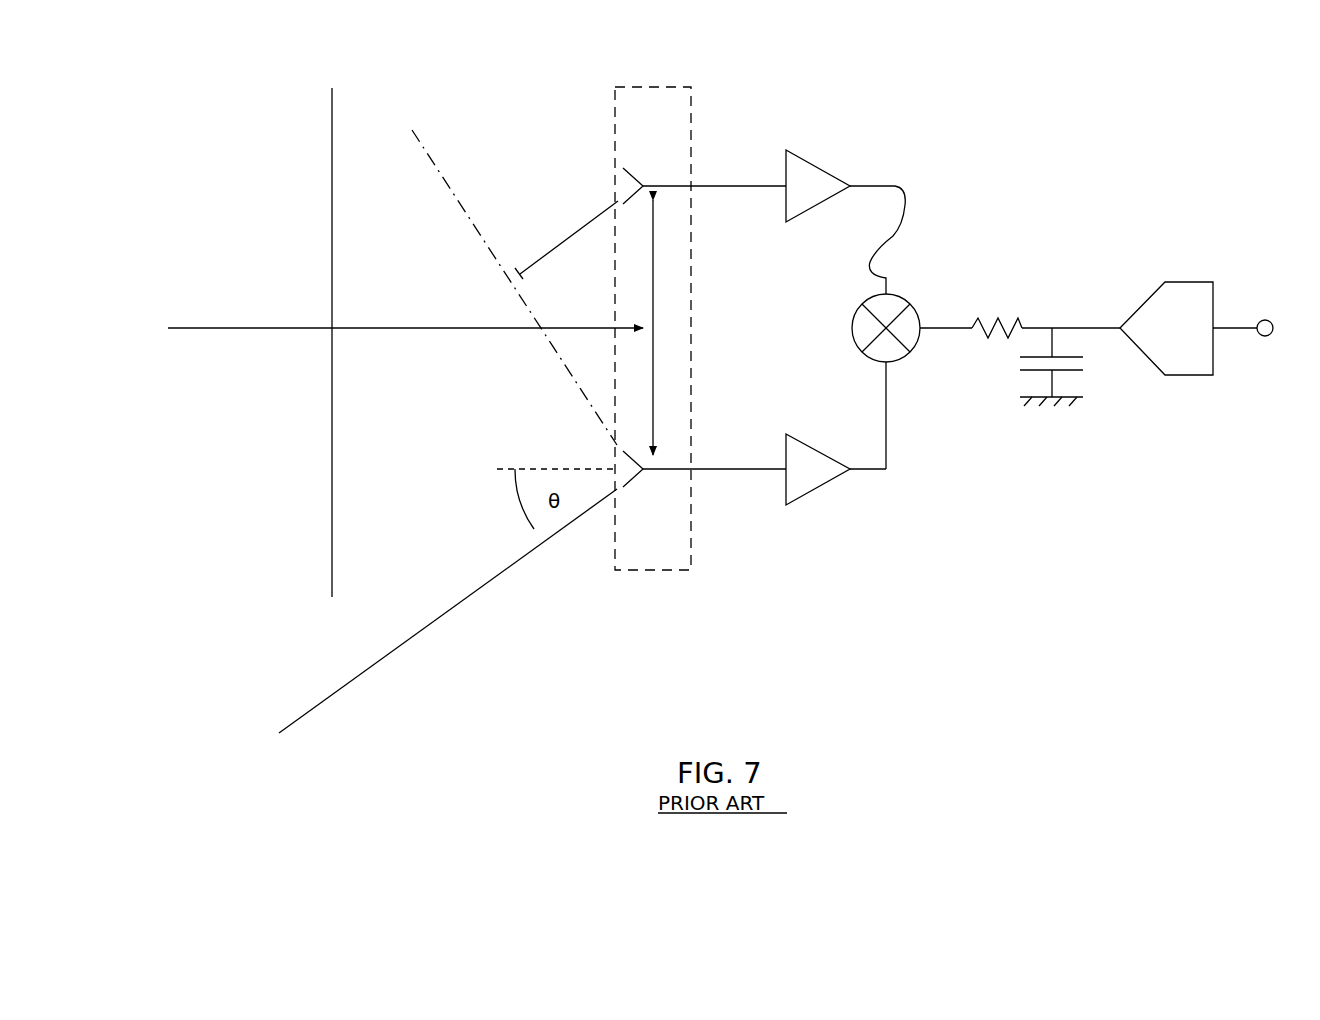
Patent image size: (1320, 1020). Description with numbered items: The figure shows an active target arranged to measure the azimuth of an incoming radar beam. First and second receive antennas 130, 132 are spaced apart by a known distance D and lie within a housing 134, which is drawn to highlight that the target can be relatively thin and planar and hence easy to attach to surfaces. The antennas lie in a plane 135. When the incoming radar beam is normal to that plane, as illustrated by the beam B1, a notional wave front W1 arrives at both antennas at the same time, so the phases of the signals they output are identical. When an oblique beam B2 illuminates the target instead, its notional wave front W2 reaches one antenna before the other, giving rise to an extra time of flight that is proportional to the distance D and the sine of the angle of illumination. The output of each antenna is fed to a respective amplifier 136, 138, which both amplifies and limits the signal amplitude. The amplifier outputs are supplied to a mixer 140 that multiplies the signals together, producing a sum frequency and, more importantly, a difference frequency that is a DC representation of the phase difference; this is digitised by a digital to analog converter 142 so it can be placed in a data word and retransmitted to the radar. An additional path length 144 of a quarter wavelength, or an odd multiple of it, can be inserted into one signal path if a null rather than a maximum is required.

The first receive antenna 130 is at (657, 495).
The second receive antenna 132 is at (634, 176).
The housing 134 is at (691, 543).
The plane 135 is at (654, 288).
The amplifier 136 is at (816, 488).
The amplifier 138 is at (836, 150).
The mixer 140 is at (912, 305).
The digital to analog converter 142 is at (1185, 281).
The additional path length 144 is at (893, 232).
The wave front W1 is at (324, 497).
The wave front W2 is at (582, 378).
The beam B1 is at (418, 330).
The oblique beam B2 is at (432, 620).